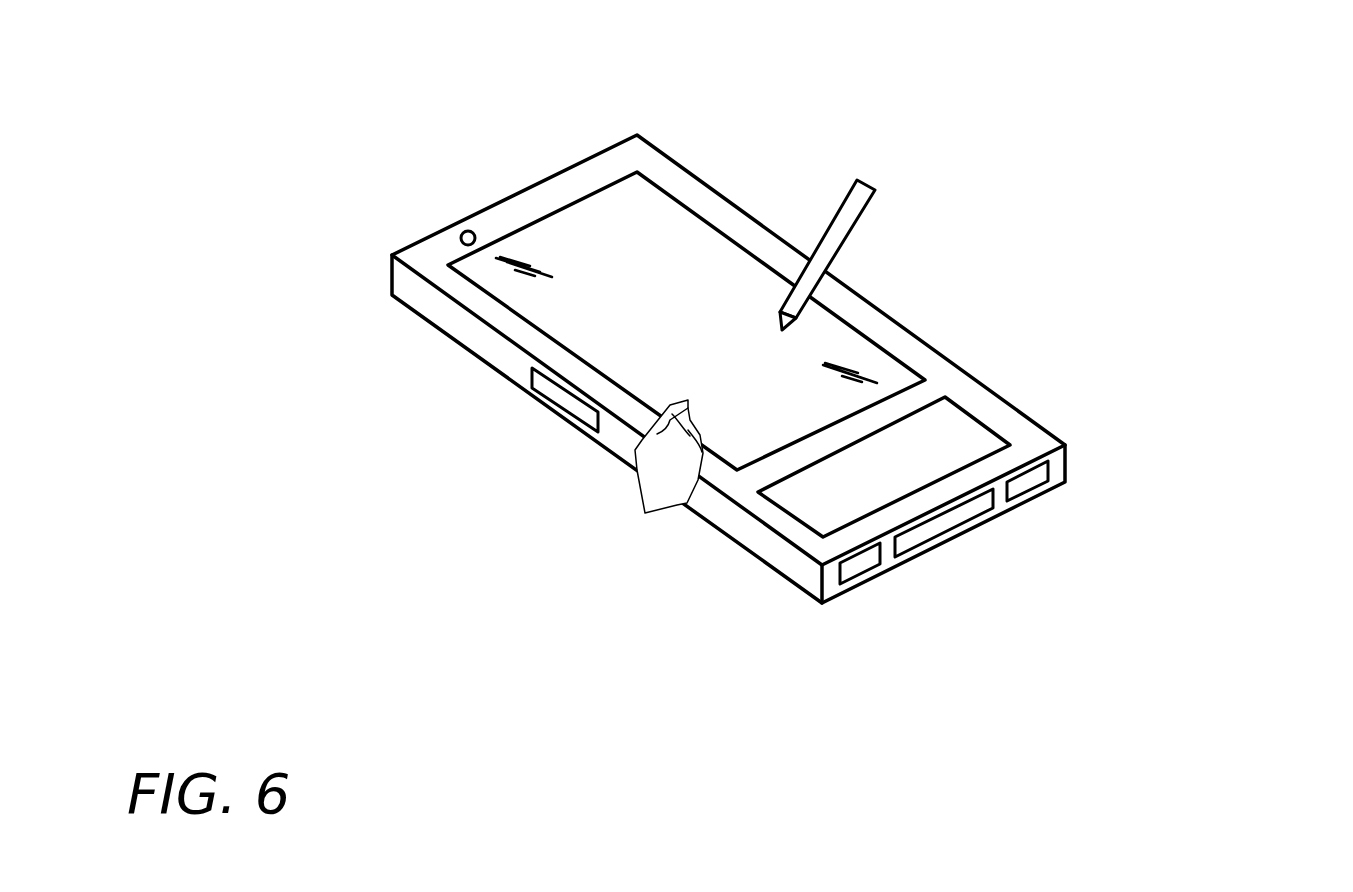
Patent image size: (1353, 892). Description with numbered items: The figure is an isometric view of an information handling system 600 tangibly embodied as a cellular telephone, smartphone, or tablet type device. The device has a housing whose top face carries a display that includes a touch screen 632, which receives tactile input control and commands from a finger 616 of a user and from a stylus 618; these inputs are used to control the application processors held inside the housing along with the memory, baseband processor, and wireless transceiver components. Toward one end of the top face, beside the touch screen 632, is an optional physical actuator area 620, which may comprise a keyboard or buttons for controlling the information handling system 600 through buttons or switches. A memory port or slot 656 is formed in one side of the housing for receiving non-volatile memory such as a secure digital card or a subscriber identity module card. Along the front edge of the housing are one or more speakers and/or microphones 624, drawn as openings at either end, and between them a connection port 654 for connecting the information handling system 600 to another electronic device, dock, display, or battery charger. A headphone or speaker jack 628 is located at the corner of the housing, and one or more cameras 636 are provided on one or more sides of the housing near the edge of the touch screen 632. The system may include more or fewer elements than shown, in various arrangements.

The information handling system 600 is at (1182, 139).
The headphone or speaker jack 628 is at (410, 247).
The camera 636 is at (590, 155).
The touch screen 632 is at (707, 322).
The physical actuator area 620 is at (952, 437).
The stylus 618 is at (843, 202).
The memory port or slot 656 is at (538, 397).
The connection port 654 is at (957, 528).
The speaker and/or microphone 624 is at (863, 573).
The finger 616 is at (677, 397).